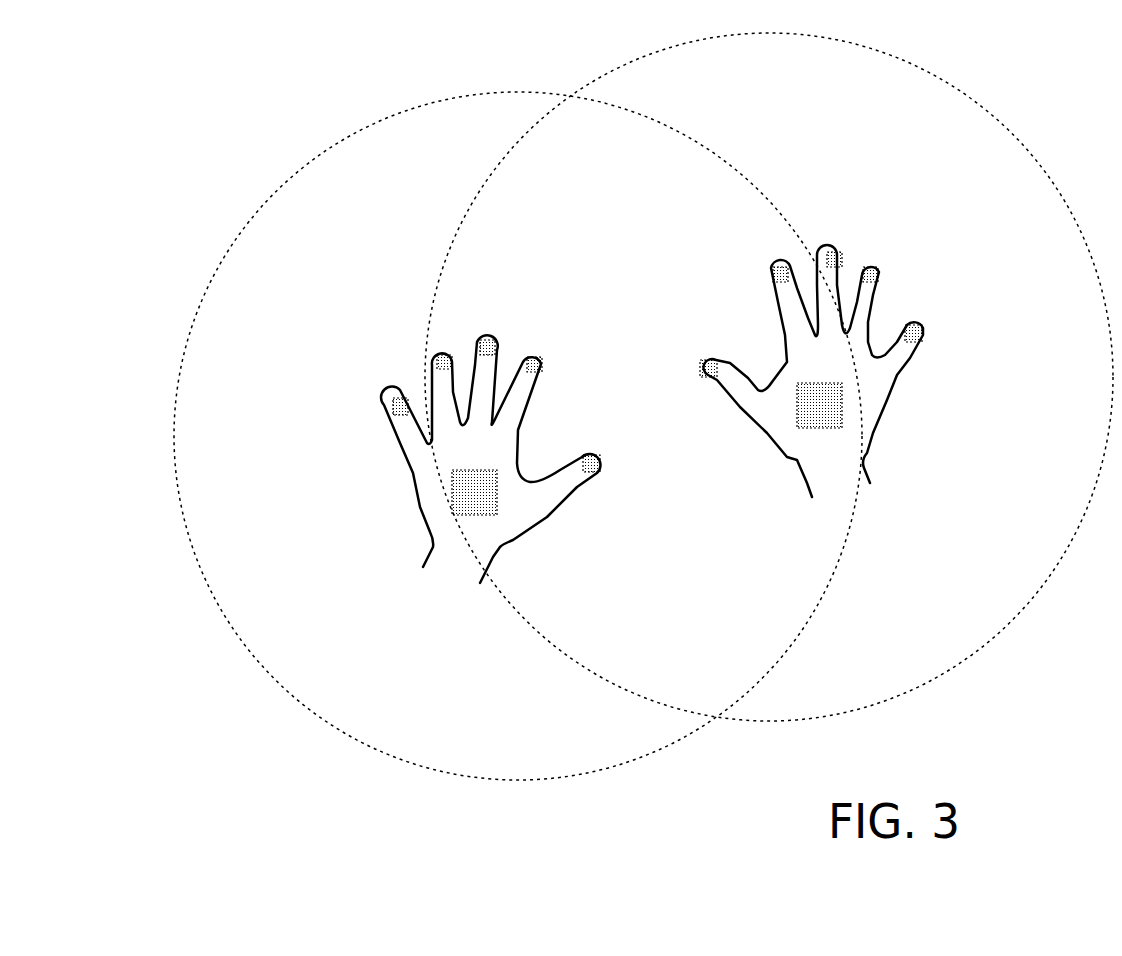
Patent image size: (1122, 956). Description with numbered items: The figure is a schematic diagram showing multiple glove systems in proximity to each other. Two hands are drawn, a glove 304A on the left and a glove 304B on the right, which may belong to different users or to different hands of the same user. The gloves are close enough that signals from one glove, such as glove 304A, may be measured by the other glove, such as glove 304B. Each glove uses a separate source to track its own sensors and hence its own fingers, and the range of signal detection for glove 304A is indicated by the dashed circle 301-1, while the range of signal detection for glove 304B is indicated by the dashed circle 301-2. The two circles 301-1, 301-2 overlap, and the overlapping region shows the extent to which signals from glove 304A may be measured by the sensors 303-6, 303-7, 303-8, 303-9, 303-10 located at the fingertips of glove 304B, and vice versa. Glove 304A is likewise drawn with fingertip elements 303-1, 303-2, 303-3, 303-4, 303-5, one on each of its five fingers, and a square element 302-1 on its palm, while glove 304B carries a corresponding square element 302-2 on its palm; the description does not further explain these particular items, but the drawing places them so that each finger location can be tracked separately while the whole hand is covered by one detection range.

The circle 301-1 is at (518, 436).
The circle 301-2 is at (769, 377).
The palm sensor of first hand 302-1 is at (473, 506).
The palm sensor of second hand 302-2 is at (824, 419).
The fingertip sensor 303-1 is at (372, 391).
The fingertip sensor 303-2 is at (424, 347).
The fingertip sensor 303-3 is at (481, 329).
The fingertip sensor 303-4 is at (553, 348).
The fingertip sensor 303-5 is at (611, 450).
The sensor 303-6 is at (688, 354).
The sensor 303-7 is at (753, 266).
The sensor 303-8 is at (825, 241).
The sensor 303-9 is at (897, 263).
The sensor 303-10 is at (946, 336).
The glove 304A is at (490, 497).
The glove 304B is at (814, 407).